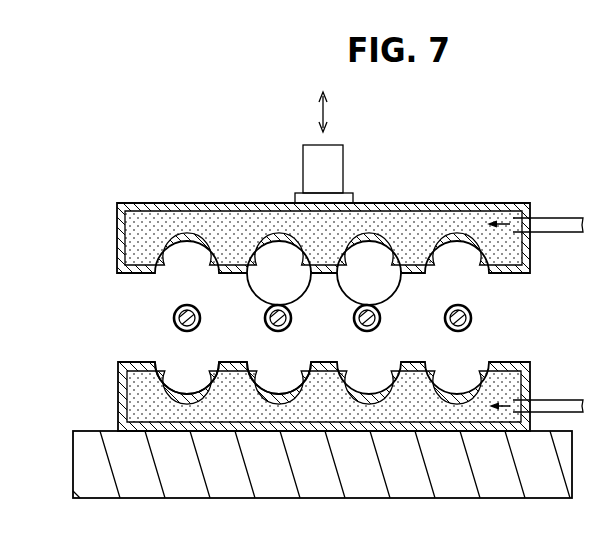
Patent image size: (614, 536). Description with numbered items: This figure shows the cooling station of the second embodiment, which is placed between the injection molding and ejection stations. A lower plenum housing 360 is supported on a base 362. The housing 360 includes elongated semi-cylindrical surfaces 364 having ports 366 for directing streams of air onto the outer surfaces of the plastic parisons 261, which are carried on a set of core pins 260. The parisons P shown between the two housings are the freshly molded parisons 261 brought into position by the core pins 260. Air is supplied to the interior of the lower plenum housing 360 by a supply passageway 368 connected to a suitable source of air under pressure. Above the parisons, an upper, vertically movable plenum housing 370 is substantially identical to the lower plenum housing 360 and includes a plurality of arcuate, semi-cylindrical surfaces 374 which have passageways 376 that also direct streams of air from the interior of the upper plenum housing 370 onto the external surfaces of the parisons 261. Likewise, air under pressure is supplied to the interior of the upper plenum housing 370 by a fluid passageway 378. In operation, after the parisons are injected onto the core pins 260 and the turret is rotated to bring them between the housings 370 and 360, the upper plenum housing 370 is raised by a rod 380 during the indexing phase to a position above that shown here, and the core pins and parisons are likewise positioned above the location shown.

The core pins 260 is at (266, 309).
The plastic parisons 261 is at (268, 328).
The pellets P is at (448, 327).
The lower plenum housing 360 is at (323, 381).
The base 362 is at (80, 462).
The elongated semi-cylindrical surfaces 364 is at (286, 372).
The ports 366 is at (198, 378).
The supply passageway 368 is at (547, 400).
The upper plenum housing 370 is at (320, 234).
The arcuate semi-cylindrical surfaces 374 is at (288, 257).
The passageways 376 is at (386, 253).
The fluid passageway 378 is at (545, 220).
The rod 380 is at (311, 163).